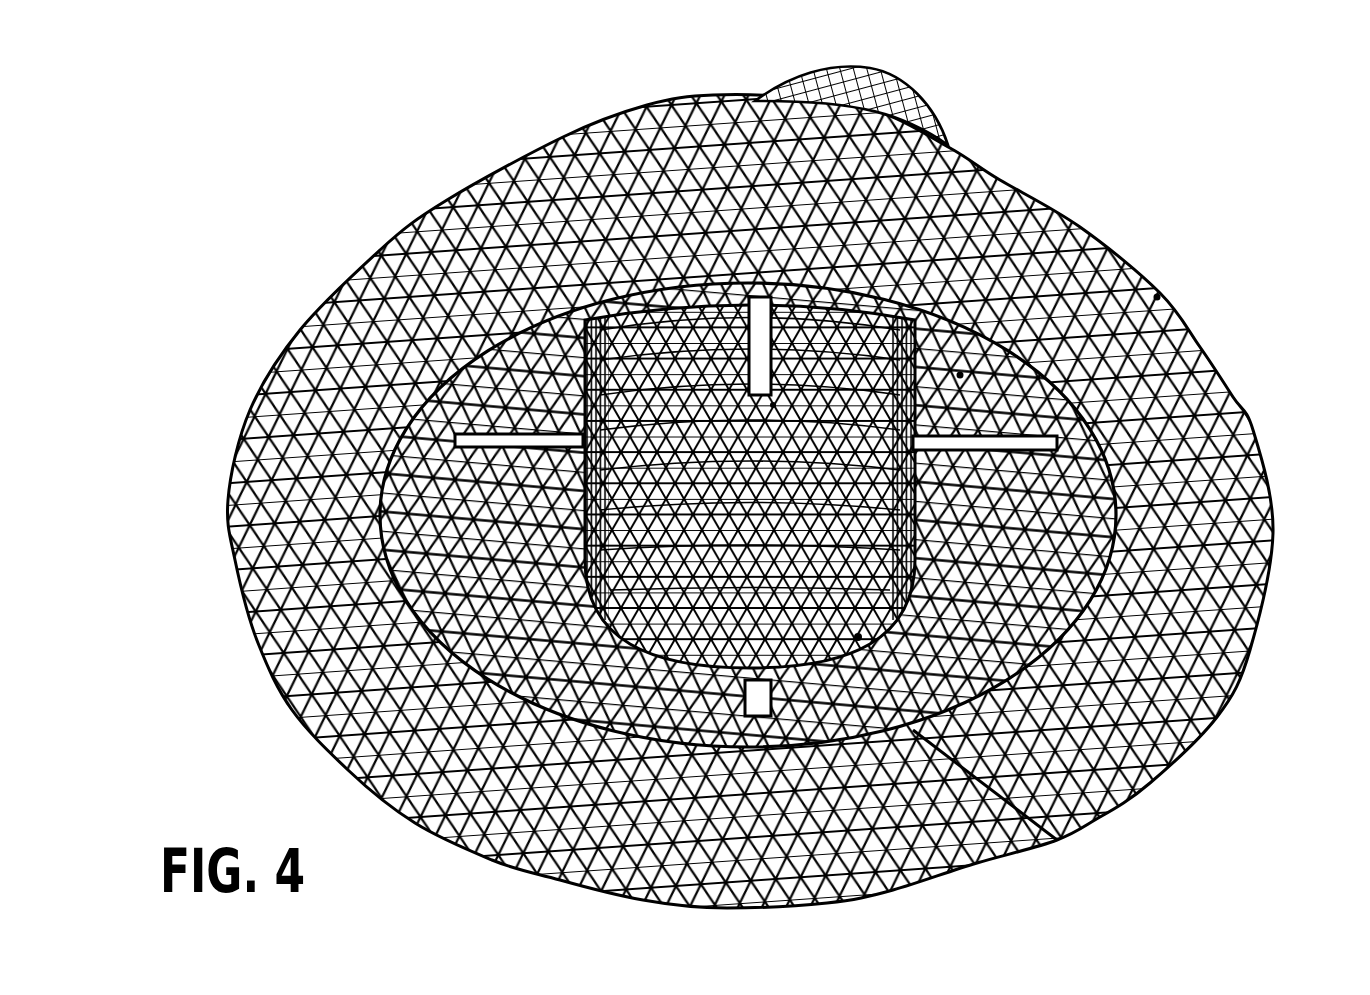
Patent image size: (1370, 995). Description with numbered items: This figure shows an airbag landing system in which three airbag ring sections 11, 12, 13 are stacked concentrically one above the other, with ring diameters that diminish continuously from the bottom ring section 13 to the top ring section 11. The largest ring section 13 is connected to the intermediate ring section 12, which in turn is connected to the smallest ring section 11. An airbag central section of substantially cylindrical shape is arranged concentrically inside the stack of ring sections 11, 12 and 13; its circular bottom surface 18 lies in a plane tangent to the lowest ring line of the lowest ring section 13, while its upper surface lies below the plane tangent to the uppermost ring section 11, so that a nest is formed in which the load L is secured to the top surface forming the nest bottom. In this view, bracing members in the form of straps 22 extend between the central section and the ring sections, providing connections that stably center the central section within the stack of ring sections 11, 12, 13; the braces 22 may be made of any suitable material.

The load L is at (912, 96).
The top ring section 11 is at (1062, 235).
The intermediate ring section 12 is at (1158, 296).
The bottom ring section 13 is at (1150, 385).
The bottom surface 18 is at (1052, 840).
The straps 22 is at (762, 320).